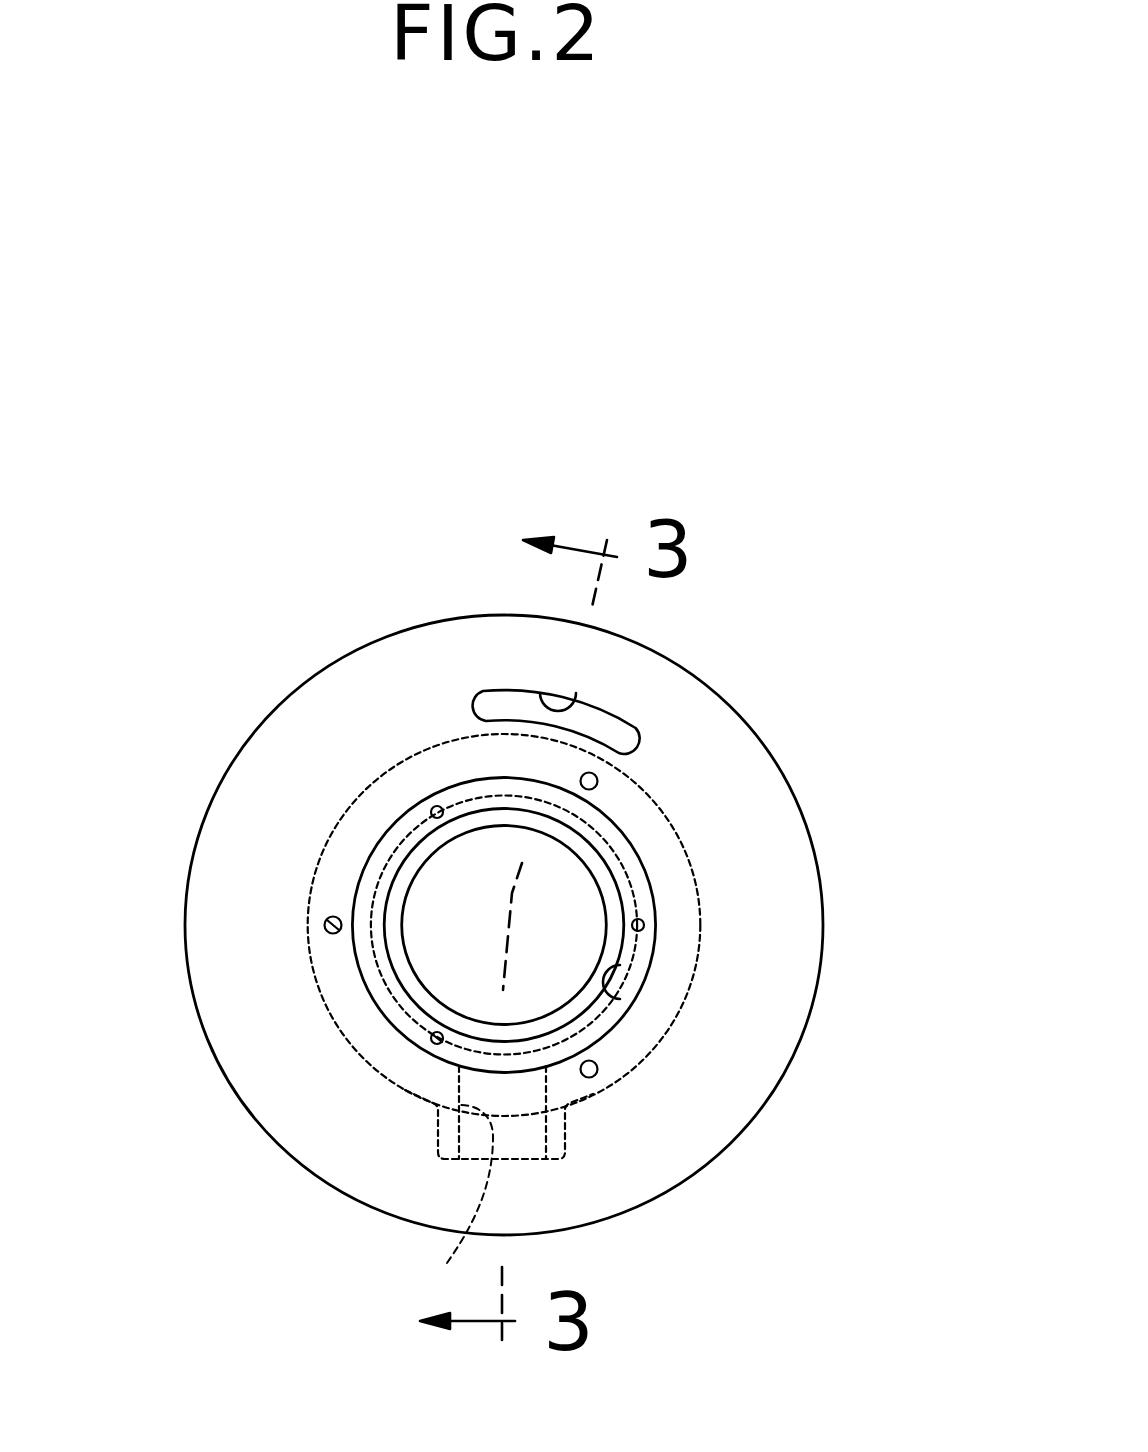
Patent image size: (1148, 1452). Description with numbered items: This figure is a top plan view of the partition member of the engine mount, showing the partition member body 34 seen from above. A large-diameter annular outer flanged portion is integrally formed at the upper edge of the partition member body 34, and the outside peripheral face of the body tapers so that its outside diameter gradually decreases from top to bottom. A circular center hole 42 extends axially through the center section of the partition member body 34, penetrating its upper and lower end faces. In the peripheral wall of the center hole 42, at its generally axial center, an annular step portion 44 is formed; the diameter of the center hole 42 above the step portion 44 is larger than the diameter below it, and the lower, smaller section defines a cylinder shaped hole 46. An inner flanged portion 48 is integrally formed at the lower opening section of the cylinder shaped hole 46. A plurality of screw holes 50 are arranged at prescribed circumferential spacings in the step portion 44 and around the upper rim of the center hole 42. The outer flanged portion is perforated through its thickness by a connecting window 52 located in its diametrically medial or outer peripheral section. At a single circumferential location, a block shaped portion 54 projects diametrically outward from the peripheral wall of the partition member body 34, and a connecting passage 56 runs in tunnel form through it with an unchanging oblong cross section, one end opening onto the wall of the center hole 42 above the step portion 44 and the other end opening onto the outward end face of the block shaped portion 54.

The partition member body 34 is at (186, 695).
The center hole 42 is at (406, 870).
The step portion 44 is at (397, 1013).
The cylinder shaped hole 46 is at (632, 995).
The inner flanged portion 48 is at (602, 873).
The screw holes 50 is at (442, 806).
The connecting window 52 is at (576, 703).
The block shaped portion 54 is at (567, 1148).
The connecting passage 56 is at (450, 1197).